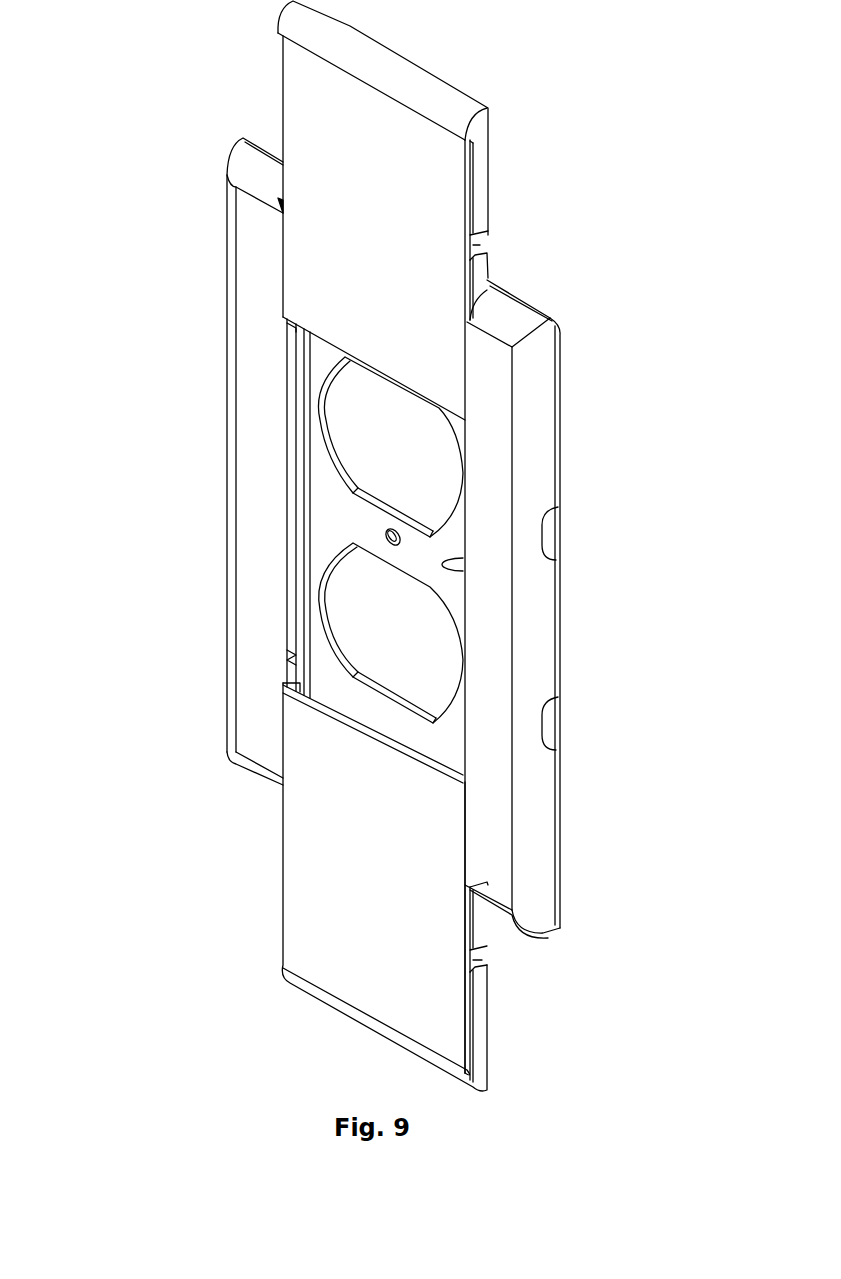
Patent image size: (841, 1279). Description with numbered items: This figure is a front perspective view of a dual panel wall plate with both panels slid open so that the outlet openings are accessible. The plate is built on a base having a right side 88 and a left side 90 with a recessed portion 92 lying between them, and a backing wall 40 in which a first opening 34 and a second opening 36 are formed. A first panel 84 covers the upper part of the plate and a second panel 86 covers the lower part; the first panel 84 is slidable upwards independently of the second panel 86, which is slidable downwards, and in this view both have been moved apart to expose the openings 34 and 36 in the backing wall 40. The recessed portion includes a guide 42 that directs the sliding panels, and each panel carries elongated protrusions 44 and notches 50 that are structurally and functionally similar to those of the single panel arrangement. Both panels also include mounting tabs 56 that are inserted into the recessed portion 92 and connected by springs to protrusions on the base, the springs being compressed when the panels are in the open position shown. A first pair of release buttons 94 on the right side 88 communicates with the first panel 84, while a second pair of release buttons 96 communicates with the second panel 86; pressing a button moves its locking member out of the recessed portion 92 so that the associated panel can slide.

The first panel 84 is at (367, 207).
The second panel 86 is at (357, 888).
The elongated protrusions 44 is at (485, 192).
The notches 50 is at (482, 243).
The mounting tabs 56 is at (288, 328).
The guide 42 is at (283, 405).
The left side 90 is at (255, 508).
The right side 88 is at (497, 432).
The opening 34 is at (390, 447).
The opening 36 is at (391, 633).
The first pair of release buttons 94 is at (548, 537).
The second pair of release buttons 96 is at (548, 728).
The recessed portion 92 is at (448, 567).
The backing wall 40 is at (453, 758).